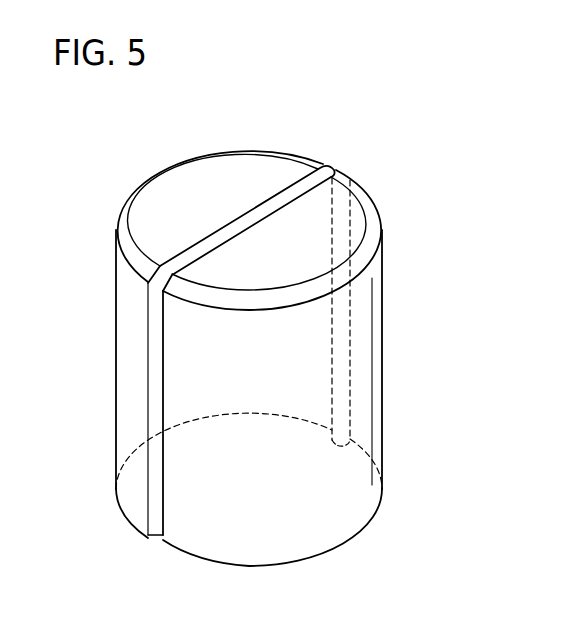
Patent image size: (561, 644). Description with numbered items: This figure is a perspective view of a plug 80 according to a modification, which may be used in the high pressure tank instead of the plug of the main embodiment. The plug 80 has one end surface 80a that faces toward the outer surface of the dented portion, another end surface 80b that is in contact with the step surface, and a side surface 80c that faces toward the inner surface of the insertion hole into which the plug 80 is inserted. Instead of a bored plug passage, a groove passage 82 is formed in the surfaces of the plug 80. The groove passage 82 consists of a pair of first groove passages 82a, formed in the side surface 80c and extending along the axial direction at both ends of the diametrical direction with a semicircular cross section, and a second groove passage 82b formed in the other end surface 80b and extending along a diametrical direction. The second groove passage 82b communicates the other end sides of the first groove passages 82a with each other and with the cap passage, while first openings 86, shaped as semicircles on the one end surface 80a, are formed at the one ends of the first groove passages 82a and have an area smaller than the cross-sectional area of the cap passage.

The plug 80 is at (446, 123).
The one end surface 80a is at (273, 545).
The other end surface 80b is at (308, 243).
The side surface 80c is at (382, 372).
The groove passage 82 is at (322, 105).
The first groove passages 82a is at (152, 310).
The second groove passage 82b is at (241, 226).
The first openings 86 is at (157, 532).